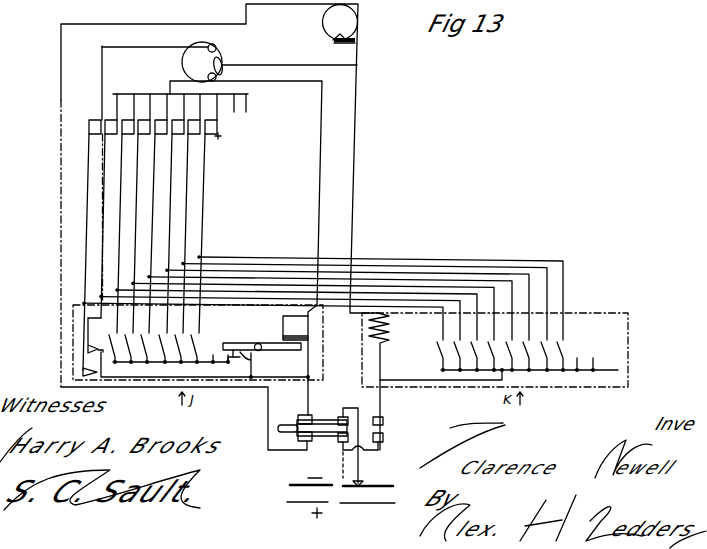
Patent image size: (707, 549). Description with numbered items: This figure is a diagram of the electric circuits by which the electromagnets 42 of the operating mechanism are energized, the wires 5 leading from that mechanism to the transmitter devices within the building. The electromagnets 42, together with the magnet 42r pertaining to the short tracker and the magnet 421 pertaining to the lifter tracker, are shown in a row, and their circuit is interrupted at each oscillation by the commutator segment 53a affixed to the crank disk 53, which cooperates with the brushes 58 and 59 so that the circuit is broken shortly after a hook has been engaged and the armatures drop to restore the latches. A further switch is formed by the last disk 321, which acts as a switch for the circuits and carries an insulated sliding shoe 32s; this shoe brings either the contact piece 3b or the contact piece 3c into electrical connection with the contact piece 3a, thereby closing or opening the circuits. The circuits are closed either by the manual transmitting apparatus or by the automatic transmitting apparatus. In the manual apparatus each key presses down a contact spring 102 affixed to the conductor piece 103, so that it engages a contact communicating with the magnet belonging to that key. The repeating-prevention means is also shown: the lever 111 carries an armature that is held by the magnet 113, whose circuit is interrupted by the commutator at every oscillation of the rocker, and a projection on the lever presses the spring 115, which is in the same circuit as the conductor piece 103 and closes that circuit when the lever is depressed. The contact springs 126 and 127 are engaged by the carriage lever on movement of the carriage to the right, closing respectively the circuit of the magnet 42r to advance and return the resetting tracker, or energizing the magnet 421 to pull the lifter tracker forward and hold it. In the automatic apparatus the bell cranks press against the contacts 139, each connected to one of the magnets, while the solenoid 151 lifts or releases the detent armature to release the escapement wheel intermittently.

The contact piece 3a is at (289, 57).
The contact piece 3b is at (217, 82).
The contact piece 3c is at (219, 42).
The sliding shoe 32s is at (226, 72).
The last disk 321 is at (202, 62).
The crank disk 53 is at (340, 22).
The commutator segment 53a is at (340, 37).
The brush 58 is at (356, 41).
The brush 59 is at (356, 44).
The magnet 42r is at (141, 121).
The magnet 421 is at (115, 133).
The electromagnet 42 is at (230, 127).
The wires 5 is at (43, 197).
The contact spring 126 is at (93, 348).
The contact spring 127 is at (93, 372).
The contact spring 102 is at (198, 356).
The conductor piece 103 is at (174, 359).
The lever 111 is at (259, 344).
The magnet 113 is at (296, 365).
The spring 115 is at (253, 360).
The solenoid or magnet 151 is at (391, 327).
The contacts 139 is at (568, 348).